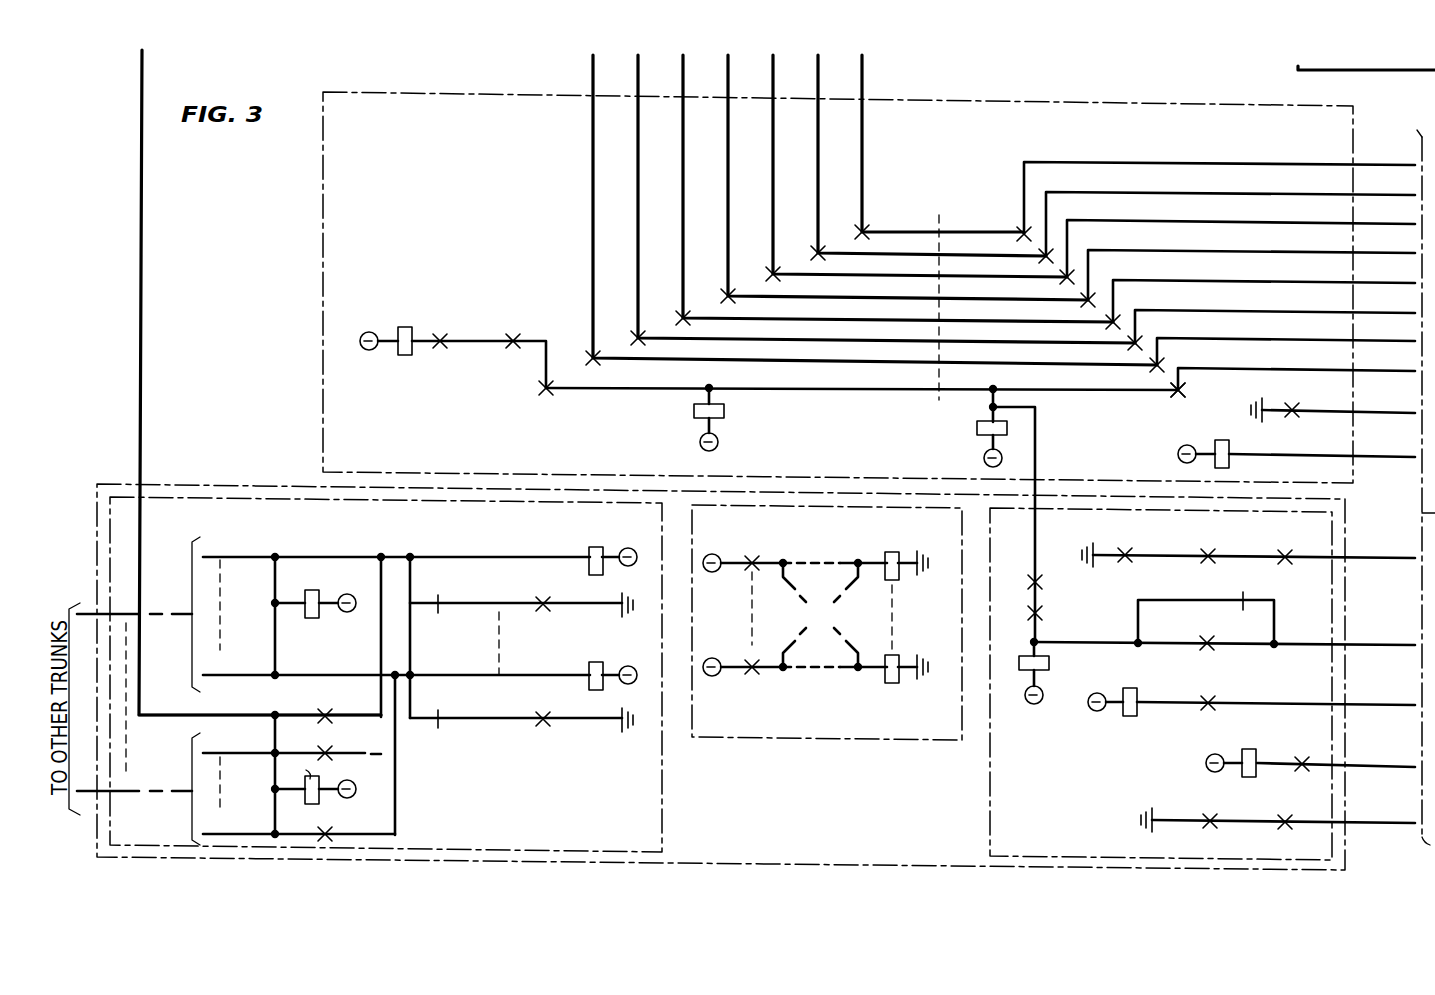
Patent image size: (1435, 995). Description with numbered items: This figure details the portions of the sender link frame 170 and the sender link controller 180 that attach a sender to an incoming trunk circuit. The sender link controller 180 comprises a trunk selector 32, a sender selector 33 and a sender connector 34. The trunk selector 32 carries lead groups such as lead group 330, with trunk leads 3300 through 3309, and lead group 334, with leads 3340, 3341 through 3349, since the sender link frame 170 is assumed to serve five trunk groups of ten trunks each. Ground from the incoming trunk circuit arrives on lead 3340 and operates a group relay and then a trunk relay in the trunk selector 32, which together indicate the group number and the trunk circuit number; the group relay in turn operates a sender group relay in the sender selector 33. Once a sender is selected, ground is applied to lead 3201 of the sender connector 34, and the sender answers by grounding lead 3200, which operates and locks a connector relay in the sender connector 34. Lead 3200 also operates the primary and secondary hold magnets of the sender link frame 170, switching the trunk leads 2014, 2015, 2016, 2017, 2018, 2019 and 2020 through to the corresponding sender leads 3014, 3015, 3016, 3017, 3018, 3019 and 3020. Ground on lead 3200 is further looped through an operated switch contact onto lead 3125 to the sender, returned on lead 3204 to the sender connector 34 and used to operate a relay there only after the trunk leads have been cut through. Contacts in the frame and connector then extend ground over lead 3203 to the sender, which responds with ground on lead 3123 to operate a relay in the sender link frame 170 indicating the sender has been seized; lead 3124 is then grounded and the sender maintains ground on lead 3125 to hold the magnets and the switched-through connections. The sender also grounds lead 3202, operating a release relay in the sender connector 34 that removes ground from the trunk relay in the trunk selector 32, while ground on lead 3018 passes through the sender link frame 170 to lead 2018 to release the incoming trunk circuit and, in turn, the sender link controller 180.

The sender link frame 170 is at (323, 236).
The sender link controller 180 is at (255, 487).
The trunk selector 32 is at (662, 757).
The sender selector 33 is at (835, 740).
The sender connector 34 is at (990, 757).
The lead group 330 is at (175, 608).
The lead group 334 is at (175, 800).
The trunk lead 3300 is at (308, 546).
The trunk lead 3309 is at (308, 664).
The lead 3340 is at (248, 384).
The trunk lead 3341 is at (292, 742).
The trunk lead 3349 is at (299, 823).
The trunk lead 2014 is at (922, 159).
The trunk lead 2015 is at (910, 169).
The trunk lead 2016 is at (877, 202).
The trunk lead 2017 is at (888, 192).
The trunk lead 2018 is at (898, 181).
The trunk lead 2019 is at (865, 213).
The trunk lead 2020 is at (933, 148).
The sender lead 3014 is at (1230, 213).
The sender lead 3015 is at (1241, 238).
The sender lead 3016 is at (1275, 315).
The sender lead 3017 is at (1264, 290).
The sender lead 3018 is at (1251, 264).
The sender lead 3019 is at (1286, 340).
The sender lead 3020 is at (1219, 187).
The lead 3125 is at (977, 371).
The lead 3124 is at (1338, 400).
The lead 3123 is at (1322, 444).
The lead 3200 is at (1224, 632).
The lead 3201 is at (1283, 811).
The lead 3202 is at (1276, 692).
The lead 3203 is at (1254, 545).
The lead 3204 is at (1336, 754).